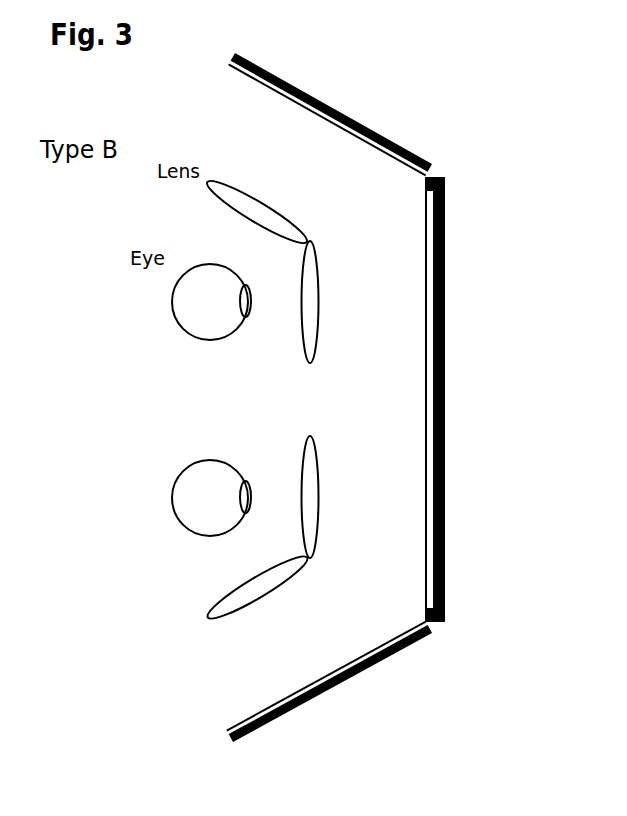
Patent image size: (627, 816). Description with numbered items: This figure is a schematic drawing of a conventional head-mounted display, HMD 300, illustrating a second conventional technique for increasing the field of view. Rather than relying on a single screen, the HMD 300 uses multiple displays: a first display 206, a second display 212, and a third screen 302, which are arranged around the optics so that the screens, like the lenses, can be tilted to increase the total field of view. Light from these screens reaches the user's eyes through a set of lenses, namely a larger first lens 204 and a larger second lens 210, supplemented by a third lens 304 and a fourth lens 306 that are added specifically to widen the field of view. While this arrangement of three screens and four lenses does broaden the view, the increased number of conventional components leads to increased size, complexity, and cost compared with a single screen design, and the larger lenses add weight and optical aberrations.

The HMD 300 is at (545, 141).
The first display 206 is at (308, 96).
The third screen 302 is at (446, 390).
The second display 212 is at (362, 677).
The third lens 304 is at (265, 213).
The first lens 204 is at (320, 322).
The second lens 210 is at (318, 485).
The fourth lens 306 is at (262, 588).